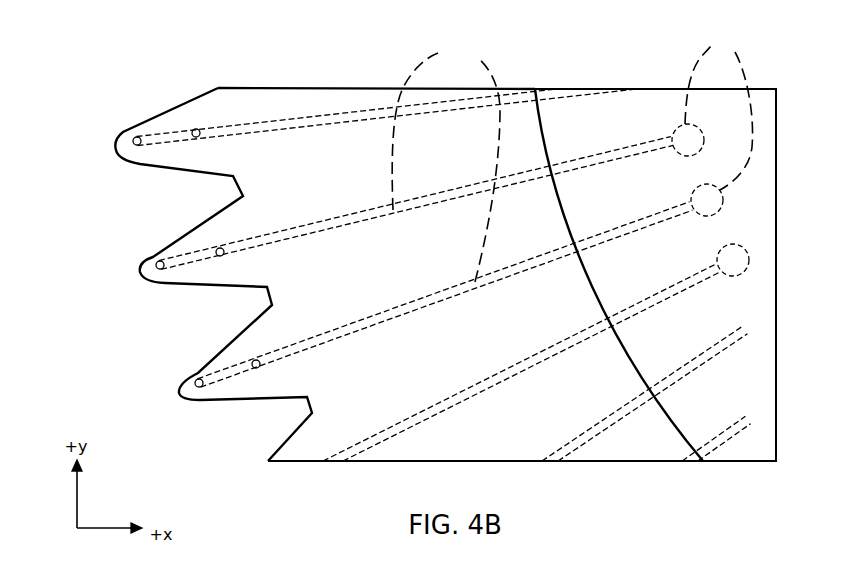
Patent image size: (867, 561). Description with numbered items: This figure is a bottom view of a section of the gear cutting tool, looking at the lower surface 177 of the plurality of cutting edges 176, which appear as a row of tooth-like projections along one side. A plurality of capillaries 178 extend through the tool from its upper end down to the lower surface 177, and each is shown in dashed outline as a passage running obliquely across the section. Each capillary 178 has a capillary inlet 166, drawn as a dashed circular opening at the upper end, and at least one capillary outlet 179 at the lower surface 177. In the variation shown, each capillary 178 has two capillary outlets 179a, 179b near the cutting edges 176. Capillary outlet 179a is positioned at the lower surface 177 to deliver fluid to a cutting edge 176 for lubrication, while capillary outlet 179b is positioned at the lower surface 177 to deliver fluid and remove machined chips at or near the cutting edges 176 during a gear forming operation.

The capillary inlet 166 is at (712, 149).
The cutting edge 176 is at (143, 120).
The lower surface 177 is at (252, 110).
The capillary 178 is at (446, 159).
The capillary outlet 179 is at (156, 260).
The capillary outlet 179a is at (133, 141).
The capillary outlet 179b is at (193, 138).